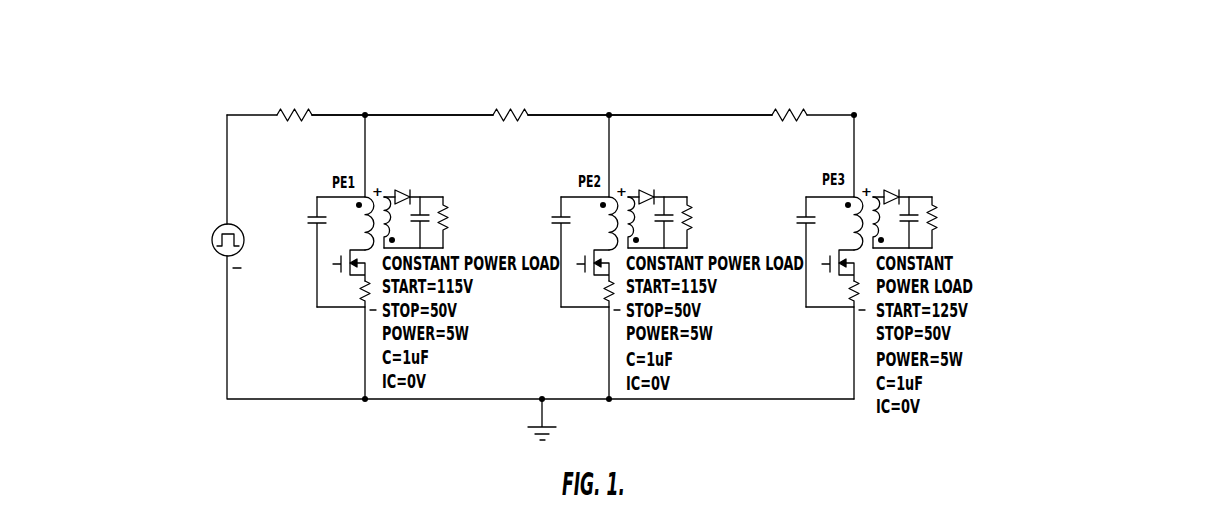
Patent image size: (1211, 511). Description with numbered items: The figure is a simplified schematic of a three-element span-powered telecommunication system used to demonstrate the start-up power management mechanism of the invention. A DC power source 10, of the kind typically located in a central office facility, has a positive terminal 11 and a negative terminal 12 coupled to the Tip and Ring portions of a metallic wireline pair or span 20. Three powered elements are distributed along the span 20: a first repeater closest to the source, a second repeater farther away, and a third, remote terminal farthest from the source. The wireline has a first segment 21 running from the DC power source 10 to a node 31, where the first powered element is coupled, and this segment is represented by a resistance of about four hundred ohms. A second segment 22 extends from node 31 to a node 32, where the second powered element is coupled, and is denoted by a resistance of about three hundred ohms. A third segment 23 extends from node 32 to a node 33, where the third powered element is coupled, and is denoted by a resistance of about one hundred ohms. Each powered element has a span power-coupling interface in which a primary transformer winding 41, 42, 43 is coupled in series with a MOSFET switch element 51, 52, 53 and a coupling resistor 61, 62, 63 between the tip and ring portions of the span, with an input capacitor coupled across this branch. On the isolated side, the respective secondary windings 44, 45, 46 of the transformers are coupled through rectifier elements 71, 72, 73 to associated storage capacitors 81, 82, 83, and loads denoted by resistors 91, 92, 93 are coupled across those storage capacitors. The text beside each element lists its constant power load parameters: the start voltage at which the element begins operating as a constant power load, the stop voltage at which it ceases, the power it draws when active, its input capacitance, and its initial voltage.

The DC power source 10 is at (245, 236).
The positive terminal 11 is at (226, 224).
The negative terminal 12 is at (238, 257).
The wireline span 20 is at (544, 114).
The first segment 21 is at (253, 117).
The second segment 22 is at (443, 112).
The third segment 23 is at (828, 112).
The node 31 is at (366, 114).
The node 32 is at (623, 99).
The node 33 is at (855, 113).
The primary transformer winding 41 is at (366, 236).
The primary transformer winding 42 is at (581, 252).
The primary transformer winding 43 is at (826, 252).
The secondary winding 44 is at (383, 196).
The secondary winding 45 is at (625, 199).
The secondary winding 46 is at (870, 198).
The MOSFET switch element 51 is at (335, 265).
The MOSFET switch element 52 is at (568, 276).
The MOSFET switch element 53 is at (812, 275).
The coupling resistor 61 is at (360, 296).
The coupling resistor 62 is at (593, 309).
The coupling resistor 63 is at (838, 310).
The rectifier element 71 is at (403, 191).
The rectifier element 72 is at (664, 179).
The rectifier element 73 is at (910, 177).
The storage capacitor 81 is at (428, 212).
The storage capacitor 82 is at (690, 206).
The storage capacitor 83 is at (935, 206).
The load resistor 91 is at (448, 219).
The load resistor 92 is at (707, 222).
The load resistor 93 is at (952, 222).